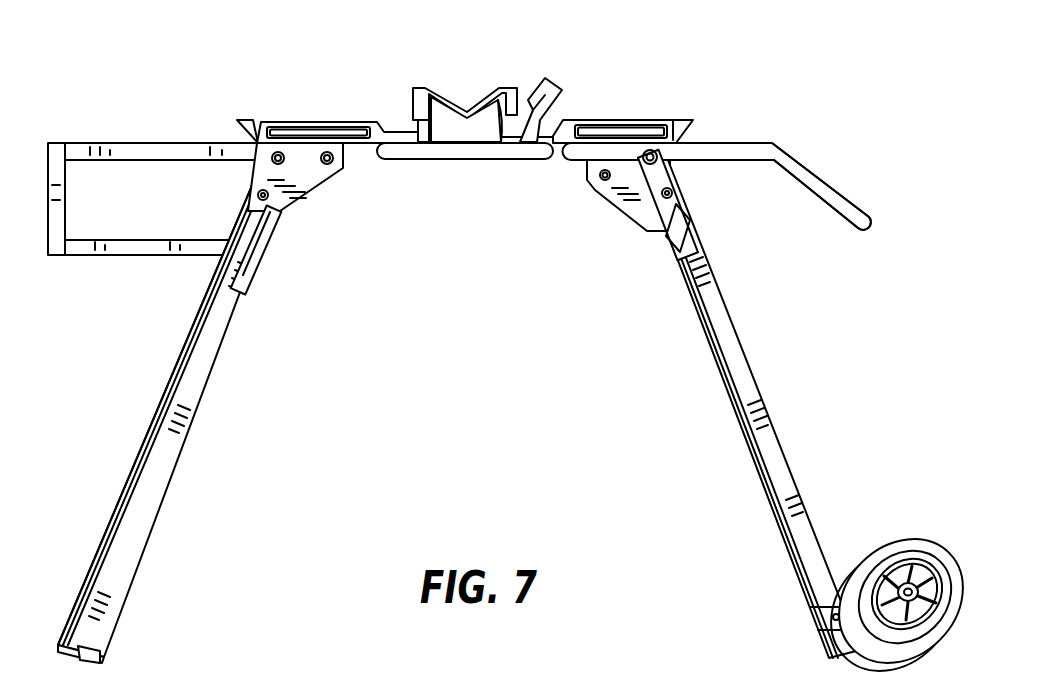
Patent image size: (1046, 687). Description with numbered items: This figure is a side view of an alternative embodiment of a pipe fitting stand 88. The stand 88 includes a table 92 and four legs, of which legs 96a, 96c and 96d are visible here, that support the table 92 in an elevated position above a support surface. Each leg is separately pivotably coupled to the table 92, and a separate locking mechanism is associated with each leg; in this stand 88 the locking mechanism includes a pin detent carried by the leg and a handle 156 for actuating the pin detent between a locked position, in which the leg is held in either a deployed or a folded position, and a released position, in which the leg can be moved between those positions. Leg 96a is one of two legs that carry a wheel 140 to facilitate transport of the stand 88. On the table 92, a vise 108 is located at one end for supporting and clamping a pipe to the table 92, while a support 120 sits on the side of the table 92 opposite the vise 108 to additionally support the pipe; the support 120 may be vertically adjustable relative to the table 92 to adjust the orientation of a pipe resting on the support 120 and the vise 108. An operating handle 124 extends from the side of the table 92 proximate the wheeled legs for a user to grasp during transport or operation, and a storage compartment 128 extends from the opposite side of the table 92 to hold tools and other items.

The pipe fitting stand 88 is at (258, 55).
The table 92 is at (400, 132).
The leg 96a is at (775, 465).
The leg 96c is at (148, 492).
The leg 96d is at (102, 528).
The vise 108 is at (566, 100).
The support 120 is at (425, 90).
The operating handle 124 is at (823, 192).
The storage compartment 128 is at (157, 148).
The wheel 140 is at (873, 543).
The handle 156 is at (270, 265).